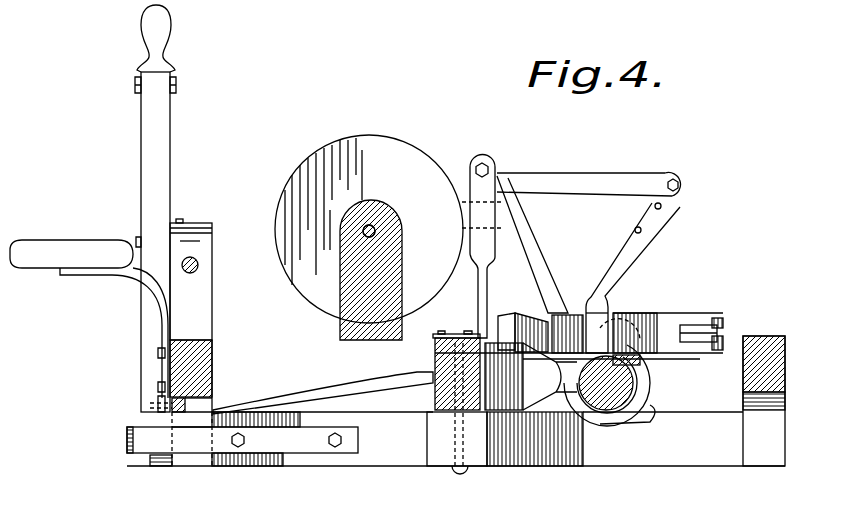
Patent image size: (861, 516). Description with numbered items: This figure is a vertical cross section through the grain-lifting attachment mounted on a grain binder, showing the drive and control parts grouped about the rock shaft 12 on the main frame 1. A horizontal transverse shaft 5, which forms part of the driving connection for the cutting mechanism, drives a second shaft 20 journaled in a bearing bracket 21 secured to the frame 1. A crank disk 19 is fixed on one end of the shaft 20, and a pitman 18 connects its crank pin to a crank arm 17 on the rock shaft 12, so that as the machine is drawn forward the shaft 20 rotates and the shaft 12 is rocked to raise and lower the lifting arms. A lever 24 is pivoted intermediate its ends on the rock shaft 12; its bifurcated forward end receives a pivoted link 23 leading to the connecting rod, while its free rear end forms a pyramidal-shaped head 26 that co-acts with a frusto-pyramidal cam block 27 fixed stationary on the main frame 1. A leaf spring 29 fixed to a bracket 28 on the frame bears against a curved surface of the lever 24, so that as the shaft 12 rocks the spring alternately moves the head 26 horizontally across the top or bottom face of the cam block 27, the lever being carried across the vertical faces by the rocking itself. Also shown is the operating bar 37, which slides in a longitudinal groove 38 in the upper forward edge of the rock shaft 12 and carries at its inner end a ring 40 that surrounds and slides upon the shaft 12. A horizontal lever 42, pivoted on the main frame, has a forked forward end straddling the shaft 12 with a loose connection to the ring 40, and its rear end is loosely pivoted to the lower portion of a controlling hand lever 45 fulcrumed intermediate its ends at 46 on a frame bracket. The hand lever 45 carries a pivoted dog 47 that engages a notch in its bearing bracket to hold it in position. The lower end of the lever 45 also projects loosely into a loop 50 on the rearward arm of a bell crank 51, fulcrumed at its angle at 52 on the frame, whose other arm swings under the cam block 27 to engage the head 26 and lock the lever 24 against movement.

The main frame 1 is at (787, 352).
The shaft 5 is at (198, 263).
The rock shaft 12 is at (607, 442).
The crank arm 17 is at (627, 253).
The pitman 18 is at (590, 193).
The crank disk 19 is at (405, 157).
The shaft 20 is at (376, 232).
The bearing bracket 21 is at (350, 286).
The pivoted link 23 is at (705, 325).
The lever 24 is at (638, 315).
The pyramidal-shaped head 26 is at (523, 316).
The cam block 27 is at (512, 387).
The bracket 28 is at (487, 245).
The leaf spring 29 is at (528, 247).
The operating bar 37 is at (640, 358).
The groove 38 is at (637, 400).
The ring 40 is at (652, 385).
The lever 42 is at (400, 377).
The controlling hand lever 45 is at (171, 158).
The fulcrum 46 is at (140, 243).
The pivoted dog 47 is at (183, 220).
The loop 50 is at (128, 442).
The bell crank 51 is at (442, 460).
The fulcrum 52 is at (467, 473).